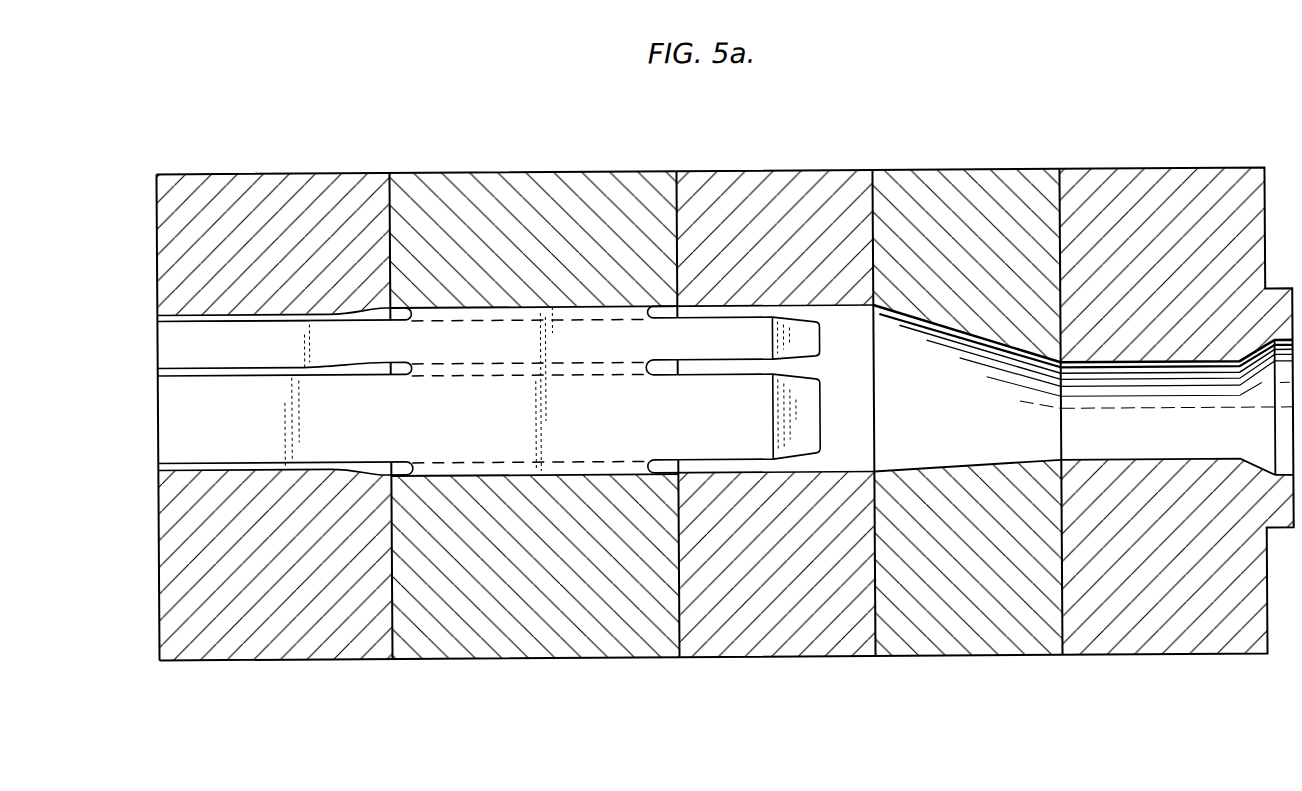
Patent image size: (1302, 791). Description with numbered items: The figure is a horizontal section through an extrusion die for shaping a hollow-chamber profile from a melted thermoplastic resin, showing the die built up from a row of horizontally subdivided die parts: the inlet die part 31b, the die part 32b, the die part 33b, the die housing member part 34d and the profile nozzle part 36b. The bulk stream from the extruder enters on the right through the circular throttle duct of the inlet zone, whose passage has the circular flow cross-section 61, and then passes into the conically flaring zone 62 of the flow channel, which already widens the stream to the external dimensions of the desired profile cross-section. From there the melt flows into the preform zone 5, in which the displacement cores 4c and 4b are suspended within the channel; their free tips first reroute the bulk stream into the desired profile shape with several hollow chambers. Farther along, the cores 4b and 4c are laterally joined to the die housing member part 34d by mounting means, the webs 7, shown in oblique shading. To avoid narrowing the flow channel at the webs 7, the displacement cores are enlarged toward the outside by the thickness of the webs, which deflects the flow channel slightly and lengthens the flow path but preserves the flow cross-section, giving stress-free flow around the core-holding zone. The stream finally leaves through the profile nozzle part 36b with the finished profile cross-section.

The profile nozzle die part 36b is at (296, 205).
The die housing member part 34d is at (608, 184).
The die part 33b is at (790, 189).
The die part 32b is at (990, 180).
The inlet die part 31b is at (1193, 189).
The webs 7 is at (498, 415).
The displacement core 4c is at (250, 348).
The displacement core 4b is at (250, 419).
The conically flaring zone 62 is at (933, 441).
The circular flow cross-section 61 is at (1135, 436).
The preform zone 5 is at (874, 740).